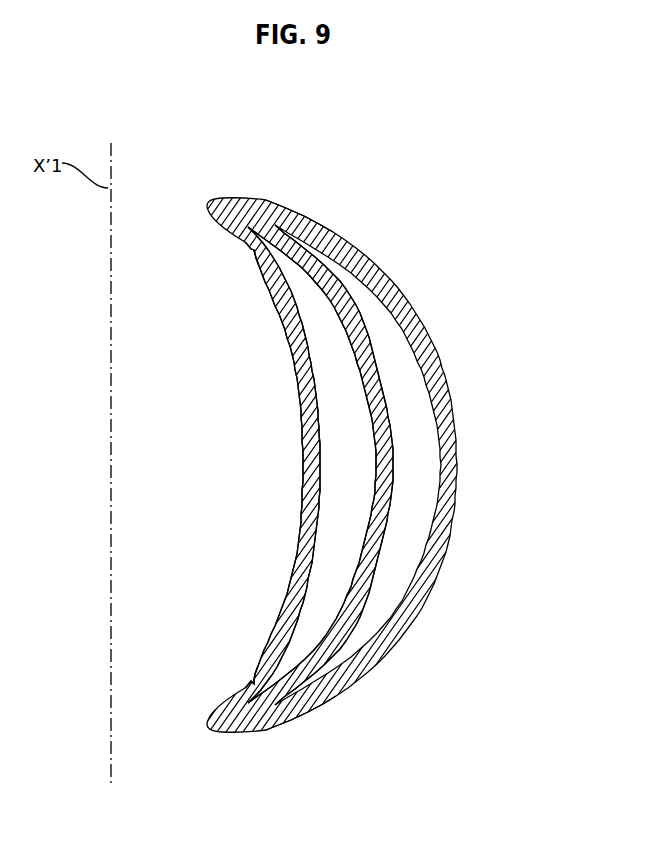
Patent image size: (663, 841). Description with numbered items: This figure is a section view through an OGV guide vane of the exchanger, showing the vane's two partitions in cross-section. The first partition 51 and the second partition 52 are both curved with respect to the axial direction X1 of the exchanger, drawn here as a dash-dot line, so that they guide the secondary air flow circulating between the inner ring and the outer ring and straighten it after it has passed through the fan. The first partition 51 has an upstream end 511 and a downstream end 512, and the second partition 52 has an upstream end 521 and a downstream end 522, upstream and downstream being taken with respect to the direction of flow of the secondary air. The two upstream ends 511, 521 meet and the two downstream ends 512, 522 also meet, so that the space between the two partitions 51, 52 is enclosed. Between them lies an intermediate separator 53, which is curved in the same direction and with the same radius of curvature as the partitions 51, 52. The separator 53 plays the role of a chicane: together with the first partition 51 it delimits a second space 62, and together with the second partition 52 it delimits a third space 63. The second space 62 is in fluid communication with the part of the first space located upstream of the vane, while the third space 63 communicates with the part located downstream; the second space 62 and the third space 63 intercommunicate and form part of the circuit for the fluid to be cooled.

The first partition 51 is at (452, 462).
The second partition 52 is at (305, 462).
The intermediate separator 53 is at (381, 436).
The second space 62 is at (425, 480).
The third space 63 is at (357, 480).
The upstream end of the first partition 511 is at (300, 703).
The downstream end of the first partition 512 is at (304, 224).
The upstream end of the second partition 521 is at (254, 683).
The downstream end of the second partition 522 is at (252, 247).
The axial direction X1 is at (108, 742).